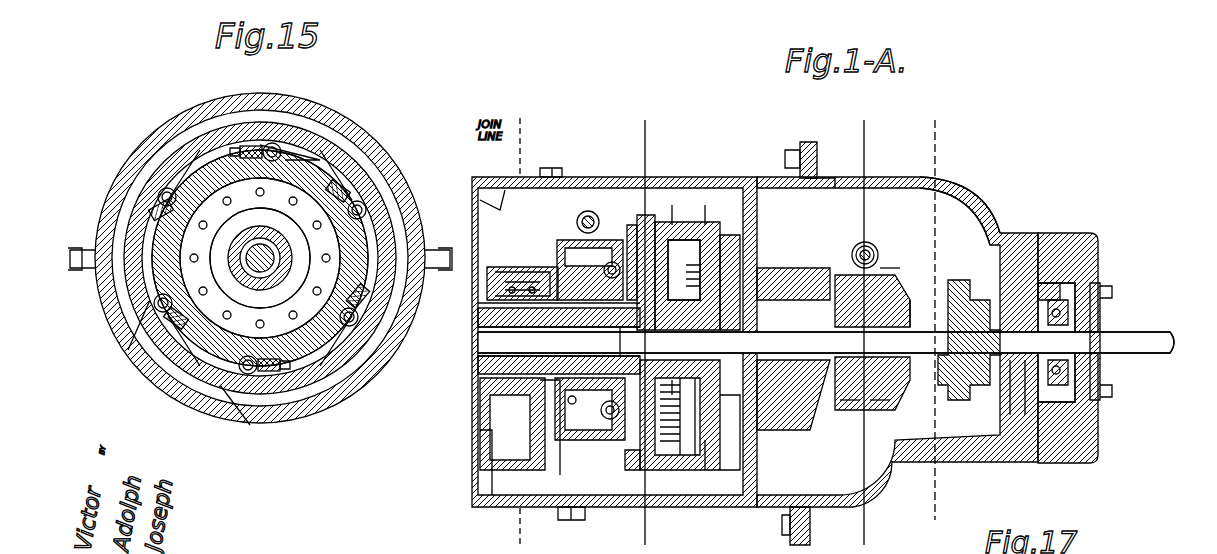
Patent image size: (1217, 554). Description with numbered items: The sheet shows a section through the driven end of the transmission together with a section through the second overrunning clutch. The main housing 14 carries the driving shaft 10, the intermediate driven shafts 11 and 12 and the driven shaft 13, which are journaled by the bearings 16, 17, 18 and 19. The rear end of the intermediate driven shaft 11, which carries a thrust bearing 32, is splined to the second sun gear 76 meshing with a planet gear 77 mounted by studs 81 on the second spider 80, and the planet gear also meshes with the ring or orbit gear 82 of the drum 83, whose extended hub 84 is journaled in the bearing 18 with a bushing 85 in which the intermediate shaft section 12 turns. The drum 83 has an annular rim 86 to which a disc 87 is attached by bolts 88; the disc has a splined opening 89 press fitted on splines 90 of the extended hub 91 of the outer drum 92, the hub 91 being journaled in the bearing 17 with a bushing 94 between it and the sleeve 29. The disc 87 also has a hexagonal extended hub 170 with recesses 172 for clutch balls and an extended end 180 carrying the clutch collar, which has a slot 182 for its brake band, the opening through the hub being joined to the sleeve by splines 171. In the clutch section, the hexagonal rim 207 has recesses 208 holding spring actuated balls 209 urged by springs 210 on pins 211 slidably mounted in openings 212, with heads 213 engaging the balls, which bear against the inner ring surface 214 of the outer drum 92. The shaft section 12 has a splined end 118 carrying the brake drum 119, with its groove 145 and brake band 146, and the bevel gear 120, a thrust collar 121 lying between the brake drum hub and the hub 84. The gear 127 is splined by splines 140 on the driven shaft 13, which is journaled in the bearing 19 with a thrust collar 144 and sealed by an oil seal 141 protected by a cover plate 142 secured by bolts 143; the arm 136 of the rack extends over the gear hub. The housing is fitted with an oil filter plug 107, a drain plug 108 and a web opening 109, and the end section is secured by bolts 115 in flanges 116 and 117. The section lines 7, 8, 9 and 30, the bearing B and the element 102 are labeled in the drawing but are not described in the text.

In FIG. 15, the main housing 14 is at (228, 112).
In FIG. 1-A, the main housing 14 is at (626, 166).
In FIG. 15, the recesses 208 is at (190, 185).
In FIG. 15, the spring actuated balls 209 is at (372, 210).
In FIG. 15, the springs 210 is at (345, 190).
In FIG. 15, the hexagonally shaped rim 207 is at (290, 158).
In FIG. 15, the pins 211 is at (385, 165).
In FIG. 15, the openings 212 is at (150, 235).
In FIG. 15, the heads 213 is at (380, 345).
In FIG. 15, the inner ring surface 214 is at (262, 412).
In FIG. 15, the bushing 94 is at (238, 252).
In FIG. 15, the intermediate driven shaft 11 is at (262, 240).
In FIG. 1-A, the intermediate driven shaft 11 is at (950, 159).
In FIG. 15, the sleeve 29 is at (288, 266).
In FIG. 1-A, the sleeve 29 is at (478, 316).
In FIG. 15, the shaft 30 is at (258, 274).
In FIG. 1-A, the shaft 30 is at (478, 322).
In FIG. 15, the bearing B is at (300, 140).
In FIG. 1-A, the bearing B is at (578, 228).
In FIG. 1-A, the bearing 18 is at (790, 275).
In FIG. 1-A, the bearing 16 is at (1070, 463).
In FIG. 1-A, the intermediate driven shaft section 12 is at (752, 348).
In FIG. 1-A, the driven shaft 13 is at (1130, 340).
In FIG. 1-A, the extended hub 91 is at (478, 298).
In FIG. 1-A, the driving shaft 10 is at (852, 159).
In FIG. 1-A, the section line 7 is at (656, 154).
In FIG. 1-A, the section line 8 is at (684, 216).
In FIG. 1-A, the section line 9 is at (700, 215).
In FIG. 1-A, the bearing 17 is at (497, 267).
In FIG. 1-A, the extended end 180 is at (548, 268).
In FIG. 1-A, the outer drum 92 is at (480, 200).
In FIG. 1-A, the extended hub 170 is at (570, 245).
In FIG. 1-A, the pockets or recesses 172 is at (615, 262).
In FIG. 1-A, the bolts 88 is at (632, 225).
In FIG. 1-A, the splined opening 89 is at (646, 272).
In FIG. 1-A, the gear 77 is at (687, 276).
In FIG. 1-A, the studs 81 is at (693, 268).
In FIG. 1-A, the second spider 80 is at (728, 270).
In FIG. 1-A, the second sun gear 76 is at (680, 415).
In FIG. 1-A, the teeth 102 is at (680, 413).
In FIG. 1-A, the second ring or orbit gear 82 is at (688, 416).
In FIG. 1-A, the thrust bearing 32 is at (630, 332).
In FIG. 1-A, the splines 171 is at (560, 348).
In FIG. 1-A, the slot 182 is at (530, 470).
In FIG. 1-A, the splines 90 is at (610, 440).
In FIG. 1-A, the disc 87 is at (618, 450).
In FIG. 1-A, the annular rim 86 is at (648, 470).
In FIG. 1-A, the drum 83 is at (690, 470).
In FIG. 1-A, the extended hub 84 is at (770, 430).
In FIG. 1-A, the bushing 85 is at (812, 430).
In FIG. 1-A, the thrust collar 121 is at (850, 275).
In FIG. 1-A, the splined end 118 is at (915, 300).
In FIG. 1-A, the brake drum 119 is at (895, 268).
In FIG. 1-A, the bevel gear 120 is at (892, 395).
In FIG. 1-A, the groove 145 is at (850, 410).
In FIG. 1-A, the brake band 146 is at (878, 410).
In FIG. 1-A, the gear 127 is at (968, 282).
In FIG. 1-A, the bearing 19 is at (1040, 285).
In FIG. 1-A, the thrust collar 144 is at (1045, 312).
In FIG. 1-A, the splines 140 is at (1010, 400).
In FIG. 1-A, the arm 136 is at (1018, 435).
In FIG. 1-A, the oil seal 141 is at (1102, 306).
In FIG. 1-A, the cover plate 142 is at (1105, 375).
In FIG. 1-A, the bolts 143 is at (1108, 400).
In FIG. 1-A, the oil filter plug 107 is at (548, 168).
In FIG. 1-A, the drain plug 108 is at (571, 520).
In FIG. 1-A, the opening 109 is at (505, 495).
In FIG. 1-A, the bolts 115 is at (785, 157).
In FIG. 1-A, the flange 116 is at (803, 143).
In FIG. 1-A, the flange 117 is at (818, 152).